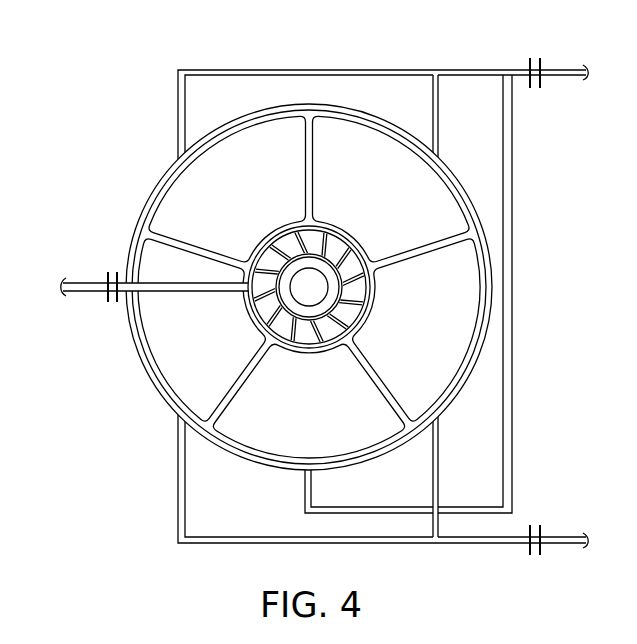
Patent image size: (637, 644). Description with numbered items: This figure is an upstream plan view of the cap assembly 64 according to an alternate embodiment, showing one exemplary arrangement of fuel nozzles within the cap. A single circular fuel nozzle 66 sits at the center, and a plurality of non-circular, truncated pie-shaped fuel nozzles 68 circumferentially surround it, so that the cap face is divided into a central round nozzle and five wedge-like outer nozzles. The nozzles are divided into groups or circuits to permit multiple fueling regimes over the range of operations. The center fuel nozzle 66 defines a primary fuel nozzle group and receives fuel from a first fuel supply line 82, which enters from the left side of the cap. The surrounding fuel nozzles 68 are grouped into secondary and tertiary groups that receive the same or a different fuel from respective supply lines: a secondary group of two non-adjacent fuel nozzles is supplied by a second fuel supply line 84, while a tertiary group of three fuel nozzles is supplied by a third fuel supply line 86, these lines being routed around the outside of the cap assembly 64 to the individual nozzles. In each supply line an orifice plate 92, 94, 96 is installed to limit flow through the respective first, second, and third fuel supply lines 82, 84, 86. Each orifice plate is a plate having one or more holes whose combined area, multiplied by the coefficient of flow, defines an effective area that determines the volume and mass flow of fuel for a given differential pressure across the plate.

The cap assembly 64 is at (144, 186).
The fuel nozzle 66 is at (215, 350).
The non-circular fuel nozzle 68 is at (172, 162).
The first fuel supply line 82 is at (62, 289).
The second fuel supply line 84 is at (584, 533).
The third fuel supply line 86 is at (560, 76).
The orifice plate 92 is at (107, 276).
The orifice plate 94 is at (546, 551).
The orifice plate 96 is at (528, 64).